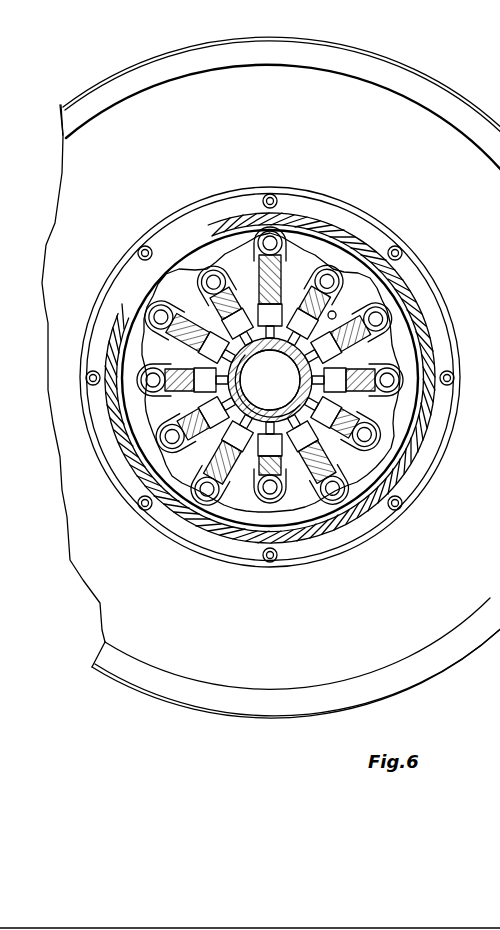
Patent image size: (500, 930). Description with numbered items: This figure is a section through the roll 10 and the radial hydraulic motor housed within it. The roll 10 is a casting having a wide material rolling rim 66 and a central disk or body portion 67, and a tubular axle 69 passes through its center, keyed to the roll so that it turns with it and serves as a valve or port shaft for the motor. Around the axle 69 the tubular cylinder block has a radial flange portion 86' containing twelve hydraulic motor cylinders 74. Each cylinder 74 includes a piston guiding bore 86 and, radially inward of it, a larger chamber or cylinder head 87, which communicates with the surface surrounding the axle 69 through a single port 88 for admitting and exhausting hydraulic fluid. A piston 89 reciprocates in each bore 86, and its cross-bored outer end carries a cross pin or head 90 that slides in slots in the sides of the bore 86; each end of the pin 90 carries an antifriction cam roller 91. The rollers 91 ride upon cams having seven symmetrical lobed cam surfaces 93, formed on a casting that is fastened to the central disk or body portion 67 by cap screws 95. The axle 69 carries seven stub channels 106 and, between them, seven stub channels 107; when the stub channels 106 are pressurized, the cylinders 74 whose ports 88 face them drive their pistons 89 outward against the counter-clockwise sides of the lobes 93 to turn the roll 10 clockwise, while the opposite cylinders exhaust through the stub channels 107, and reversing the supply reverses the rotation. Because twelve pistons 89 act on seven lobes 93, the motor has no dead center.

The roll 10 is at (148, 694).
The material rolling rim 66 is at (441, 84).
The central disk or body portion 67 is at (283, 121).
The hydraulic motor cylinders 74 is at (250, 289).
The cap screws 95 is at (141, 248).
The stub channels 106 is at (270, 380).
The port 88 is at (226, 377).
The tubular axle 69 is at (267, 386).
The stub channels 107 is at (342, 421).
The cylinder head 87 is at (315, 459).
The piston 89 is at (195, 426).
The cross pin or head 90 is at (198, 490).
The antifriction bearing or cam roller 91 is at (212, 493).
The radial flange portion 86' is at (271, 412).
The piston guiding bore 86 is at (308, 501).
The lobed cam surfaces 93 is at (278, 520).